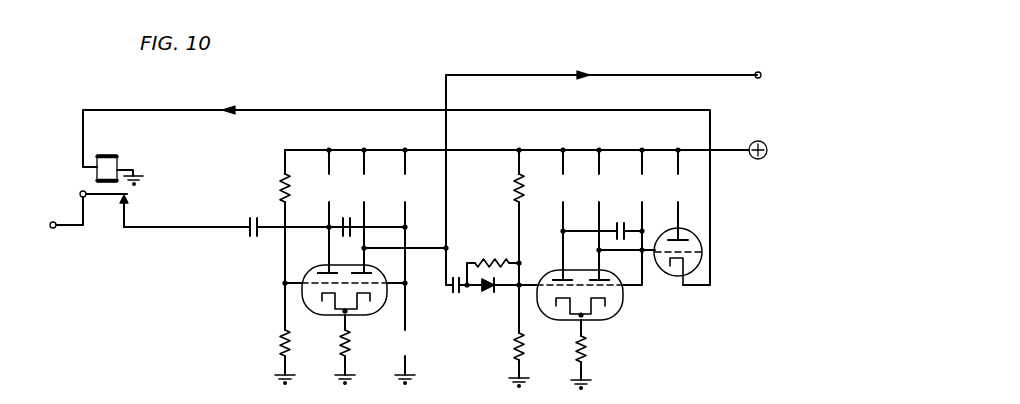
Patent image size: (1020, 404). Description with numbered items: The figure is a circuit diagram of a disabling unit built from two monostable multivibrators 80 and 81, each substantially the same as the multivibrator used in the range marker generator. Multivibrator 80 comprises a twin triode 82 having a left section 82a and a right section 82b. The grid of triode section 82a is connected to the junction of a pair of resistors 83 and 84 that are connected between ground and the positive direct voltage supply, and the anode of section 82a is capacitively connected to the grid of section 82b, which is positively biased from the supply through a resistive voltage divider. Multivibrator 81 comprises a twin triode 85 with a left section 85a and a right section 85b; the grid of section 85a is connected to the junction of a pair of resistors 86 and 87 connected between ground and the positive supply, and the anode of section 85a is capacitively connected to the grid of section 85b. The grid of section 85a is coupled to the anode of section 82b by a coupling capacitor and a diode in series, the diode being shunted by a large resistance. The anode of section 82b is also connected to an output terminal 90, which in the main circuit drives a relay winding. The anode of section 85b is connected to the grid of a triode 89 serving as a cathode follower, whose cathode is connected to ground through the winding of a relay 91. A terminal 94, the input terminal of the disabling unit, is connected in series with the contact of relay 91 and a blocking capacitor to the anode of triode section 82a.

The monostable multivibrator 80 is at (316, 290).
The monostable multivibrator 81 is at (476, 290).
The twin triode 82 is at (357, 318).
The left section of twin triode 82a is at (315, 265).
The right section of twin triode 82b is at (385, 275).
The resistor 83 is at (278, 345).
The resistor 84 is at (277, 188).
The twin triode 85 is at (606, 322).
The left section of twin triode 85a is at (556, 268).
The right section of twin triode 85b is at (618, 295).
The resistor 86 is at (512, 345).
The resistor 87 is at (512, 190).
The triode 89 is at (703, 262).
The output terminal 90 is at (758, 68).
The relay 91 is at (115, 160).
The terminal 94 is at (55, 232).